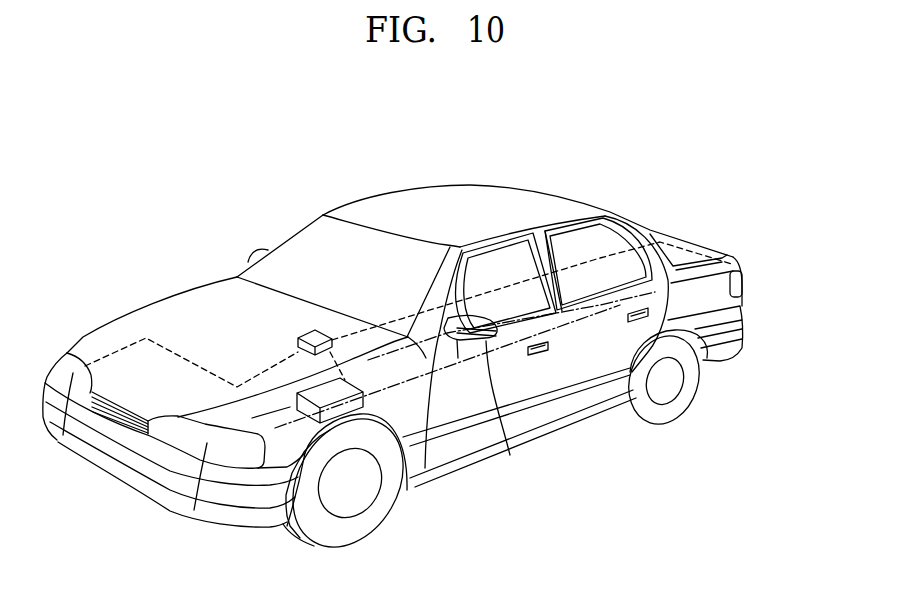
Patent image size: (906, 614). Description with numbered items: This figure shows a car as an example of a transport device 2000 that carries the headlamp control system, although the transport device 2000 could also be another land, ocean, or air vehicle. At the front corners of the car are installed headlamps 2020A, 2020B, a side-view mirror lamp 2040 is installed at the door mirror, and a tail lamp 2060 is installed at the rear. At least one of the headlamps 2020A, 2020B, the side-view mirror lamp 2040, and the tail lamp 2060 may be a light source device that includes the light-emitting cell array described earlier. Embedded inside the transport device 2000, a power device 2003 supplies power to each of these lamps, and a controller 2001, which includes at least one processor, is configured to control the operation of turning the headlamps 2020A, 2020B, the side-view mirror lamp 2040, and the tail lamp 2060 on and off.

The transport device 2000 is at (148, 116).
The controller 2001 is at (303, 333).
The power device 2003 is at (317, 390).
The headlamp 2020A is at (62, 440).
The headlamp 2020B is at (193, 515).
The side-view mirror lamp 2040 is at (511, 462).
The tail lamp 2060 is at (740, 280).